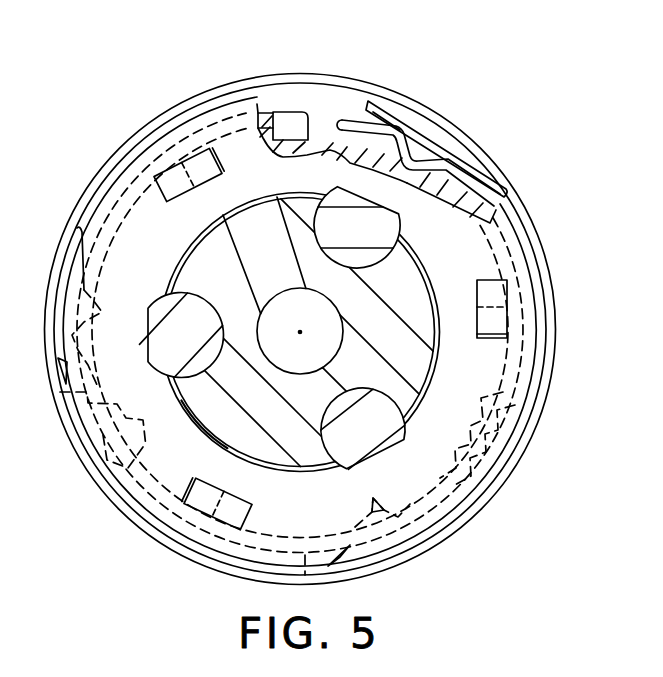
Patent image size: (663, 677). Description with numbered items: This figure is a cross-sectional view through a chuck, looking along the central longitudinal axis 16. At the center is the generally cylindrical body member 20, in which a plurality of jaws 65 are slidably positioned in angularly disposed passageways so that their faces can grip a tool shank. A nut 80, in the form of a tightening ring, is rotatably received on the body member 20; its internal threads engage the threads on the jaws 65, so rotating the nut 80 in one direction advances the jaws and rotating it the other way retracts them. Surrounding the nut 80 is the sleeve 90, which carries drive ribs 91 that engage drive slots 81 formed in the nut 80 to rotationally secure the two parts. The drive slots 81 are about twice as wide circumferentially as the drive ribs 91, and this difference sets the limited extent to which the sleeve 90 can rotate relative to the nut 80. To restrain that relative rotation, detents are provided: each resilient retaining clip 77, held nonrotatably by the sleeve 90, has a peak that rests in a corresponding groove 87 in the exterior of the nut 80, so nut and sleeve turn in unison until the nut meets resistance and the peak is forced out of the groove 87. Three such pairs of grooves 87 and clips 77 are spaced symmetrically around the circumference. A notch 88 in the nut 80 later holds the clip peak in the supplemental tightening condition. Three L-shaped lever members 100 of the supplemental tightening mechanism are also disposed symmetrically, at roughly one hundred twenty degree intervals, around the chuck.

The central longitudinal axis 16 is at (300, 333).
The body member 20 is at (227, 262).
The jaws 65 is at (173, 332).
The resilient retaining clip 77 is at (472, 172).
The nut 80 is at (453, 200).
The drive slots 81 is at (290, 135).
The groove 87 is at (406, 186).
The notch 88 is at (403, 123).
The sleeve 90 is at (557, 331).
The drive ribs 91 is at (323, 130).
The lever member 100 is at (173, 182).